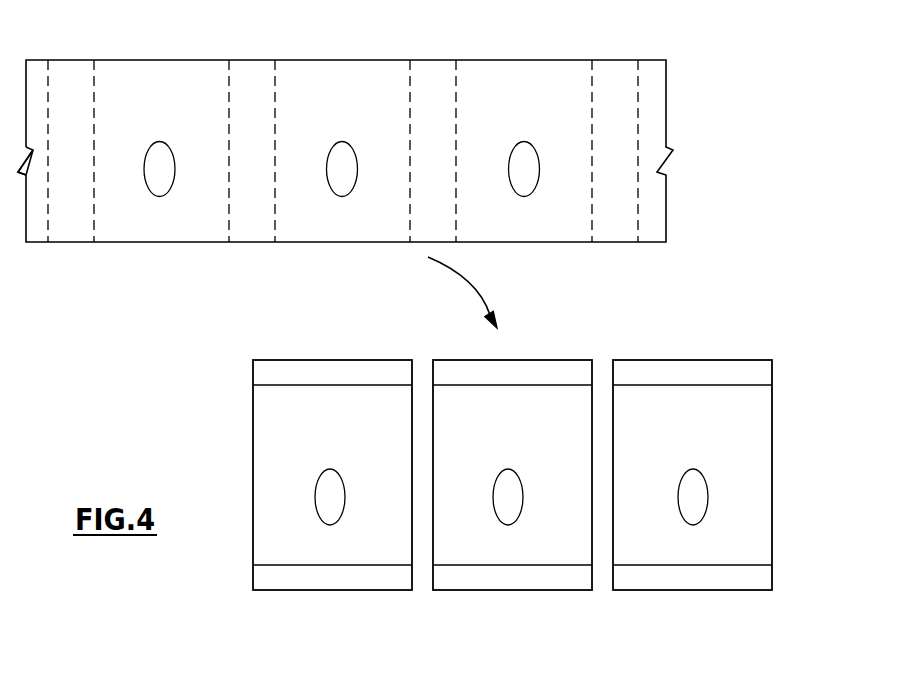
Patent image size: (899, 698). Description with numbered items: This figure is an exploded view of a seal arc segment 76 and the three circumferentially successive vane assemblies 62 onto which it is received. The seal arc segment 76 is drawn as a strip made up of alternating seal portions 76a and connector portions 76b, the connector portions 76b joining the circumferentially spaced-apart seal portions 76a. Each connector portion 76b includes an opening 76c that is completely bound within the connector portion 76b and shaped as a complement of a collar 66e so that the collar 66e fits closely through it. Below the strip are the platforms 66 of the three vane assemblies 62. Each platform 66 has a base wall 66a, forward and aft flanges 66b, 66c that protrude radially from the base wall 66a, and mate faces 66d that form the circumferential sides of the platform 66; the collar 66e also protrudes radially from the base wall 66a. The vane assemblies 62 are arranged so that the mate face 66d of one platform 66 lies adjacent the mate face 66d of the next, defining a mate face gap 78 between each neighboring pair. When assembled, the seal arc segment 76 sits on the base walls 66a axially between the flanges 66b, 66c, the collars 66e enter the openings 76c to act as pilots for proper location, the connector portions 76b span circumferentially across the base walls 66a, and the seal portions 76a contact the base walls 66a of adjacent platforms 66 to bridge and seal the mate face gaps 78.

The seal arc segment 76 is at (197, 45).
The seal portions 76a is at (252, 223).
The connector portions 76b is at (135, 80).
The opening 76c is at (160, 141).
The first platform 66 is at (252, 548).
The base wall 66a is at (275, 443).
The forward flange 66b is at (328, 578).
The aft flange 66c is at (320, 373).
The mate faces 66d is at (428, 410).
The collar 66e is at (342, 483).
The vane assemblies 62 is at (284, 616).
The mate face gap 78 is at (588, 441).